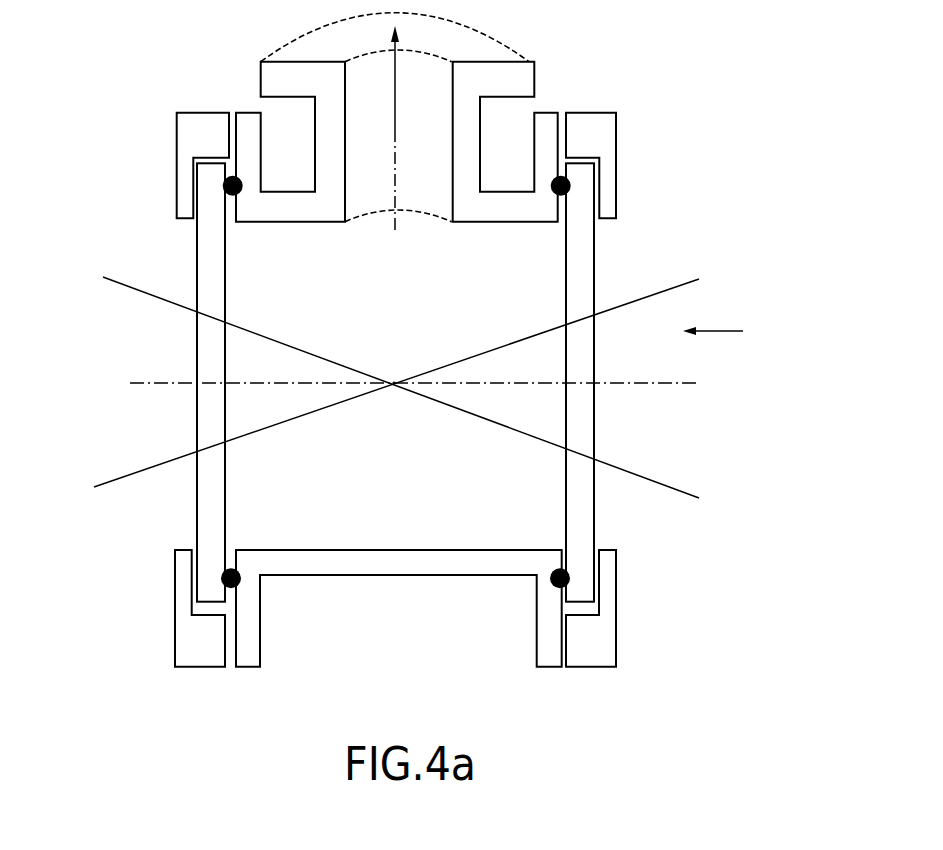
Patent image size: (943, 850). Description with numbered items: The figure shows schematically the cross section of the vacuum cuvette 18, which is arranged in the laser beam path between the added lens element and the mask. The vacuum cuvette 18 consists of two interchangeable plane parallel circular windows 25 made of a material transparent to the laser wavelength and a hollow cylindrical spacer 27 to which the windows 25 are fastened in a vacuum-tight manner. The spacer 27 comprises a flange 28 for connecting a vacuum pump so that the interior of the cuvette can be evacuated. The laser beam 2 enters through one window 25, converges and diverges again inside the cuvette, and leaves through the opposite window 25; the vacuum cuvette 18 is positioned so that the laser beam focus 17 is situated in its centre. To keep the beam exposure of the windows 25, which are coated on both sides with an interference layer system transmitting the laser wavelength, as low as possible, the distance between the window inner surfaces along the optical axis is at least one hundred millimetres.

The laser beam 2 is at (150, 295).
The laser beam focus 17 is at (393, 383).
The vacuum cuvette 18 is at (731, 332).
The plane parallel circular windows 25 is at (582, 268).
The hollow cylindrical spacer 27 is at (460, 563).
The flange 28 is at (468, 125).